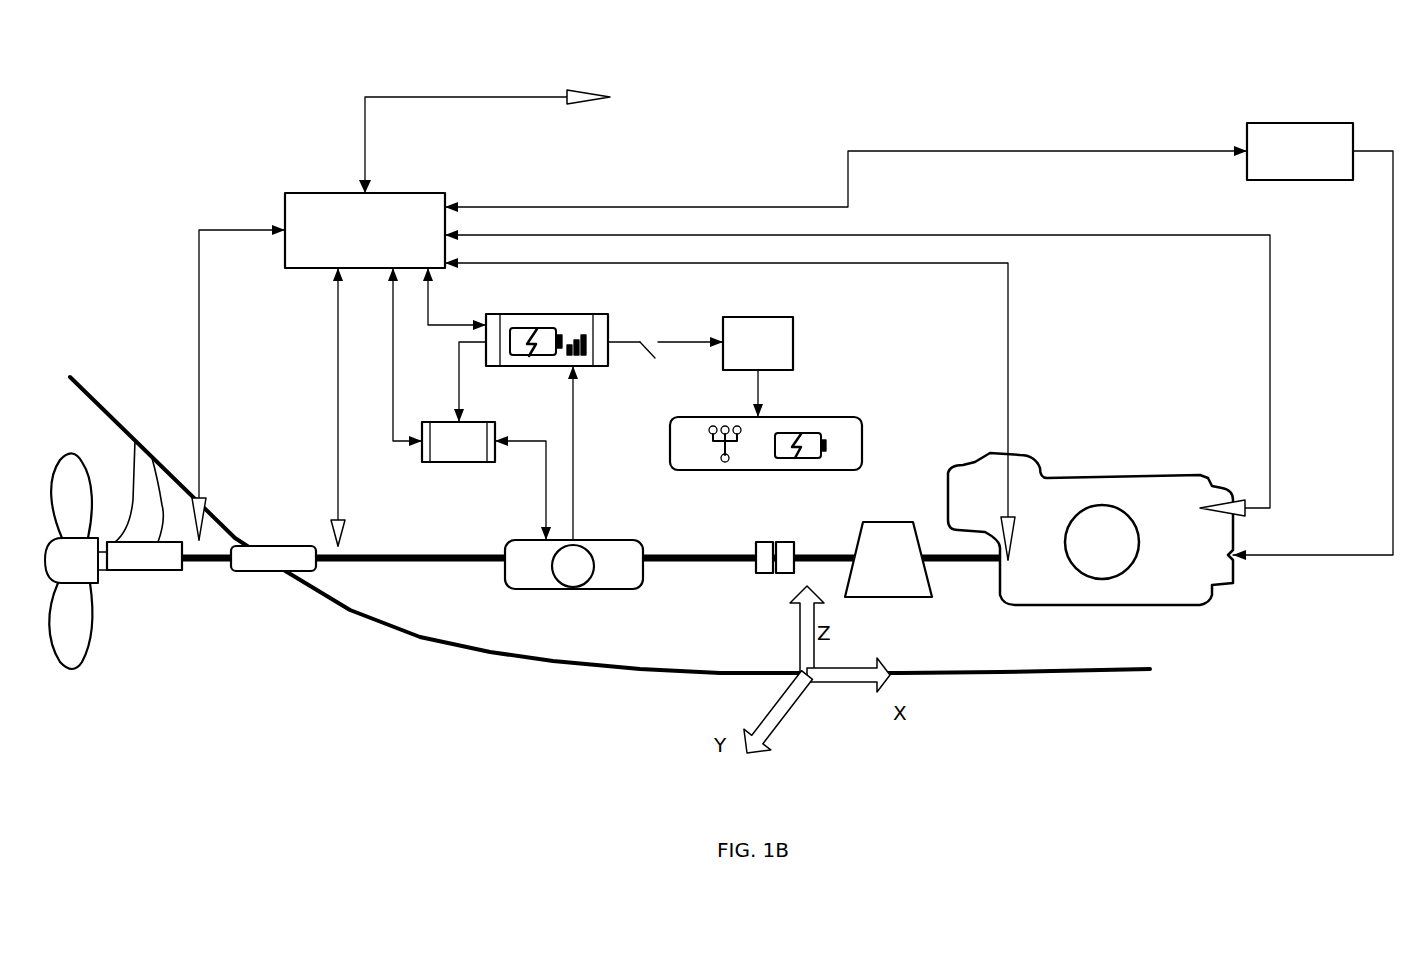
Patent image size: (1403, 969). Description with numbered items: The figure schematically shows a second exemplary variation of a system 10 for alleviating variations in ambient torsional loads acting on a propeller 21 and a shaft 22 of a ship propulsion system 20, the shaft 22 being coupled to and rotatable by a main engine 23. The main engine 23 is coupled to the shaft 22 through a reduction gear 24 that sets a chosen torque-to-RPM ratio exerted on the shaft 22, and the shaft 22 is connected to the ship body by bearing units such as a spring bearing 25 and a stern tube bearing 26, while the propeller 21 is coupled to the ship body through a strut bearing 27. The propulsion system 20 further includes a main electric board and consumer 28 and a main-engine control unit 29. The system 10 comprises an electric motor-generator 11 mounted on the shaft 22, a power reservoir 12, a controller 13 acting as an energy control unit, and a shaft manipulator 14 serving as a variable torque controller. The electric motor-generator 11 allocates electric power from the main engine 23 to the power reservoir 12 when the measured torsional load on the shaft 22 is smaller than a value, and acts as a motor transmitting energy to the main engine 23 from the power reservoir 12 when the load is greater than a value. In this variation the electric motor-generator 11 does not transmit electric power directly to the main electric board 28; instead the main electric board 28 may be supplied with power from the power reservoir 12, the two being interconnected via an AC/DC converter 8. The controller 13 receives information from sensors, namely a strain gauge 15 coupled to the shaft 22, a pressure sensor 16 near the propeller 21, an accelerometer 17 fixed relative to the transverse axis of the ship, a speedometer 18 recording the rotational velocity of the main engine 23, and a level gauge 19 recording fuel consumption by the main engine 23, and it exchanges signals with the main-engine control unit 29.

The AC/DC converter 8 is at (788, 311).
The system 10 is at (260, 72).
The electric motor-generator 11 is at (574, 564).
The power reservoir 12 is at (579, 307).
The controller 13 is at (365, 230).
The shaft manipulator 14 is at (469, 404).
The strain gauge 15 is at (351, 409).
The pressure sensor 16 is at (238, 382).
The accelerometer 17 is at (484, 128).
The speedometer 18 is at (742, 410).
The level gauge 19 is at (857, 373).
The ship propulsion system 20 is at (528, 692).
The propeller 21 is at (101, 633).
The shaft 22 is at (392, 572).
The main engine 23 is at (1090, 529).
The reduction gear 24 is at (888, 559).
The spring bearing 25 is at (754, 584).
The stern tube bearing 26 is at (263, 584).
The strut bearing 27 is at (152, 584).
The main electric board and consumer 28 is at (708, 480).
The main-engine control unit 29 is at (919, 341).